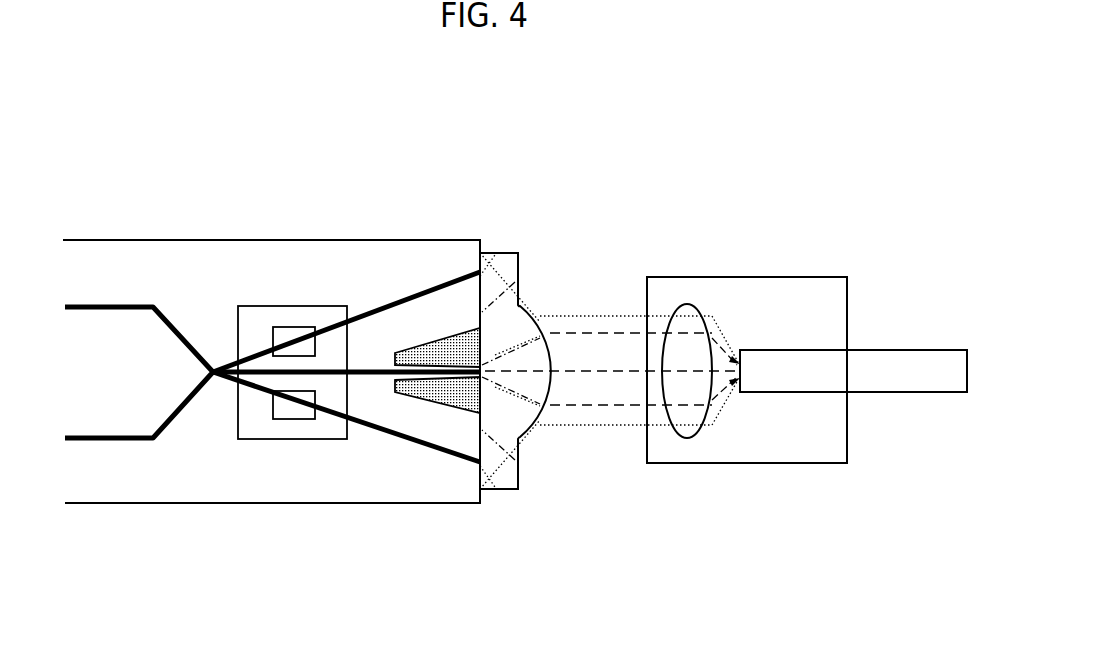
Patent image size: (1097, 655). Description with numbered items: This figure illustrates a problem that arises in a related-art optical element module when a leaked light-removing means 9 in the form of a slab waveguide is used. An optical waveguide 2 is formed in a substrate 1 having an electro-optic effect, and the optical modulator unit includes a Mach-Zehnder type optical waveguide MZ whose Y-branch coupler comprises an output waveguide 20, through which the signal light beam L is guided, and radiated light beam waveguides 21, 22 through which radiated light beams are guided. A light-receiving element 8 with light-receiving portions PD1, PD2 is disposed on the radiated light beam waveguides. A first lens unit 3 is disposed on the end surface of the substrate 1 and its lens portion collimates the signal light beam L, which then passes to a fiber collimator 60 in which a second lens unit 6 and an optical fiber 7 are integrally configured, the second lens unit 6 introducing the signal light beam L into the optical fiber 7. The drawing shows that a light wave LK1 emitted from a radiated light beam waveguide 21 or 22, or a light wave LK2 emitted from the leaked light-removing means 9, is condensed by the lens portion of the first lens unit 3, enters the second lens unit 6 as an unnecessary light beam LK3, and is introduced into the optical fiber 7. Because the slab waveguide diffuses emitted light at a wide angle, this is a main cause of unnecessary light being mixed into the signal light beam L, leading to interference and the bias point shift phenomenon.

The substrate 1 is at (380, 260).
The optical waveguide 2 is at (139, 428).
The Mach-Zehnder type optical waveguide MZ is at (139, 353).
The first lens unit 3 is at (490, 252).
The second lens unit 6 is at (690, 437).
The optical fiber 7 is at (917, 393).
The fiber collimator 60 is at (790, 463).
The light-receiving element 8 is at (279, 361).
The light-receiving portion PD1 is at (283, 327).
The light-receiving portion PD2 is at (300, 420).
The leaked light-removing means 9 is at (457, 398).
The output waveguide 20 is at (372, 378).
The radiated light beam waveguide 21 is at (432, 290).
The radiated light beam waveguide 22 is at (437, 447).
The signal light beam L is at (605, 333).
The light wave LK1 is at (537, 333).
The light wave LK2 is at (542, 388).
The unnecessary light beam LK3 is at (622, 318).